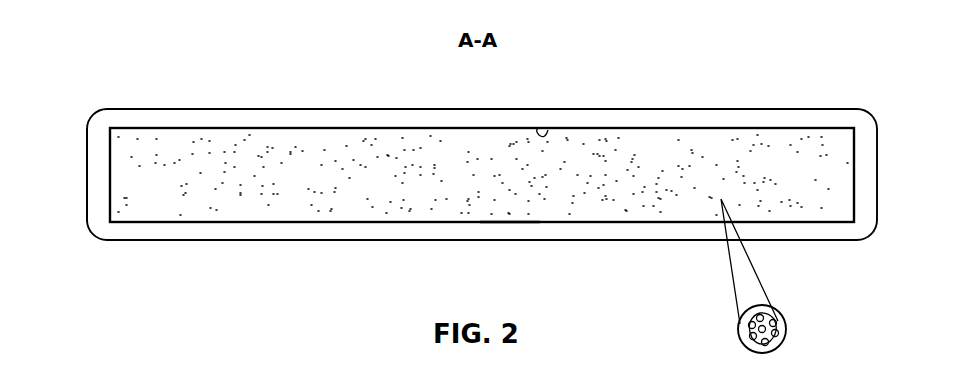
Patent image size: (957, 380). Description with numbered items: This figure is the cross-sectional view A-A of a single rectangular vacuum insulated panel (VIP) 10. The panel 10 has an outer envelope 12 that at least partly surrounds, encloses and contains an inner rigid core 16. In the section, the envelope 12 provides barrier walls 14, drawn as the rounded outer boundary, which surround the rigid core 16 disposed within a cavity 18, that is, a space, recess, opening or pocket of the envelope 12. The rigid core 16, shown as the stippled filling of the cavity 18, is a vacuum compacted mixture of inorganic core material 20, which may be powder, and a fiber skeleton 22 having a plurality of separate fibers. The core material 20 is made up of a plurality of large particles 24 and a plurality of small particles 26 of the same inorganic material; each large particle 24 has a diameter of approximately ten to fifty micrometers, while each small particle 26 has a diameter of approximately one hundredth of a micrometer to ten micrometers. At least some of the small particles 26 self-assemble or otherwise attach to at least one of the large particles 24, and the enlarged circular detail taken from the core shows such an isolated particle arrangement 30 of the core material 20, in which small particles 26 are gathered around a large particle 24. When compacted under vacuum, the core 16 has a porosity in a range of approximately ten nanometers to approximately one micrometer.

The vacuum insulated panel 10 is at (86, 98).
The outer envelope 12 is at (737, 93).
The barrier walls 14 is at (136, 119).
The inner rigid core 16 is at (232, 166).
The cavity 18 is at (548, 130).
The inorganic core material 20 is at (509, 203).
The fiber skeleton 22 is at (355, 176).
The large particles 24 is at (771, 317).
The small particles 26 is at (782, 317).
The particle arrangement 30 is at (773, 344).